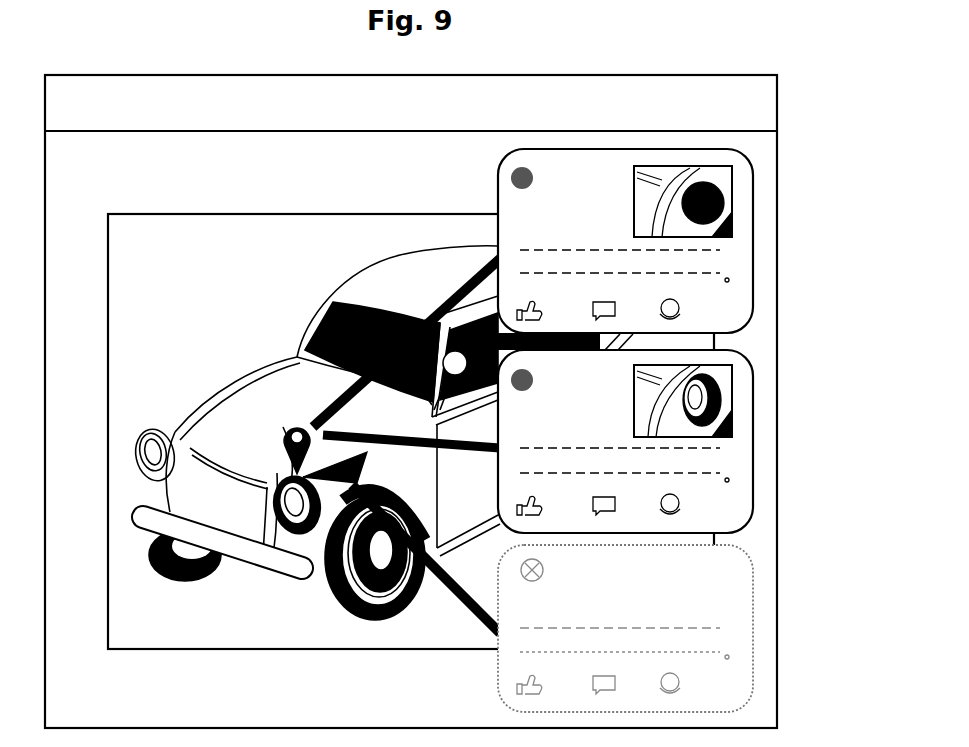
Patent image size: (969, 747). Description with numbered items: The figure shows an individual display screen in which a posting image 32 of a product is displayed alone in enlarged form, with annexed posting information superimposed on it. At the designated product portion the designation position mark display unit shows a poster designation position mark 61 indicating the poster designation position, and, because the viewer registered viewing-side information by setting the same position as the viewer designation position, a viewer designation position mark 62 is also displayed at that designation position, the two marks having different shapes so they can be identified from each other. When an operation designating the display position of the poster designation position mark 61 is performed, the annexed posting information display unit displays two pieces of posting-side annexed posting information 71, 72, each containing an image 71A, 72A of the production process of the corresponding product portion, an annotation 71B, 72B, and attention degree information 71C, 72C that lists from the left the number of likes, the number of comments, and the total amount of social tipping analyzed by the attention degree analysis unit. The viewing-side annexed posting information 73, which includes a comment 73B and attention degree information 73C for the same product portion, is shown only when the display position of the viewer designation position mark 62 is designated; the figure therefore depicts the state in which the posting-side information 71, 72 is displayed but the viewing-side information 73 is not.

The posting image 32 is at (302, 215).
The poster designation position mark 61 is at (283, 427).
The viewer designation position mark 62 is at (312, 575).
The posting-side annexed posting information 71 is at (674, 226).
The image of a production process 71A is at (734, 205).
The annotation 71B is at (735, 260).
The attention degree information 71C is at (737, 312).
The posting-side annexed posting information 72 is at (673, 427).
The image of a production process 72A is at (735, 408).
The annotation 72B is at (735, 460).
The attention degree information 72C is at (735, 513).
The viewing-side annexed posting information 73 is at (675, 628).
The comment 73B is at (735, 635).
The attention degree information 73C is at (735, 688).